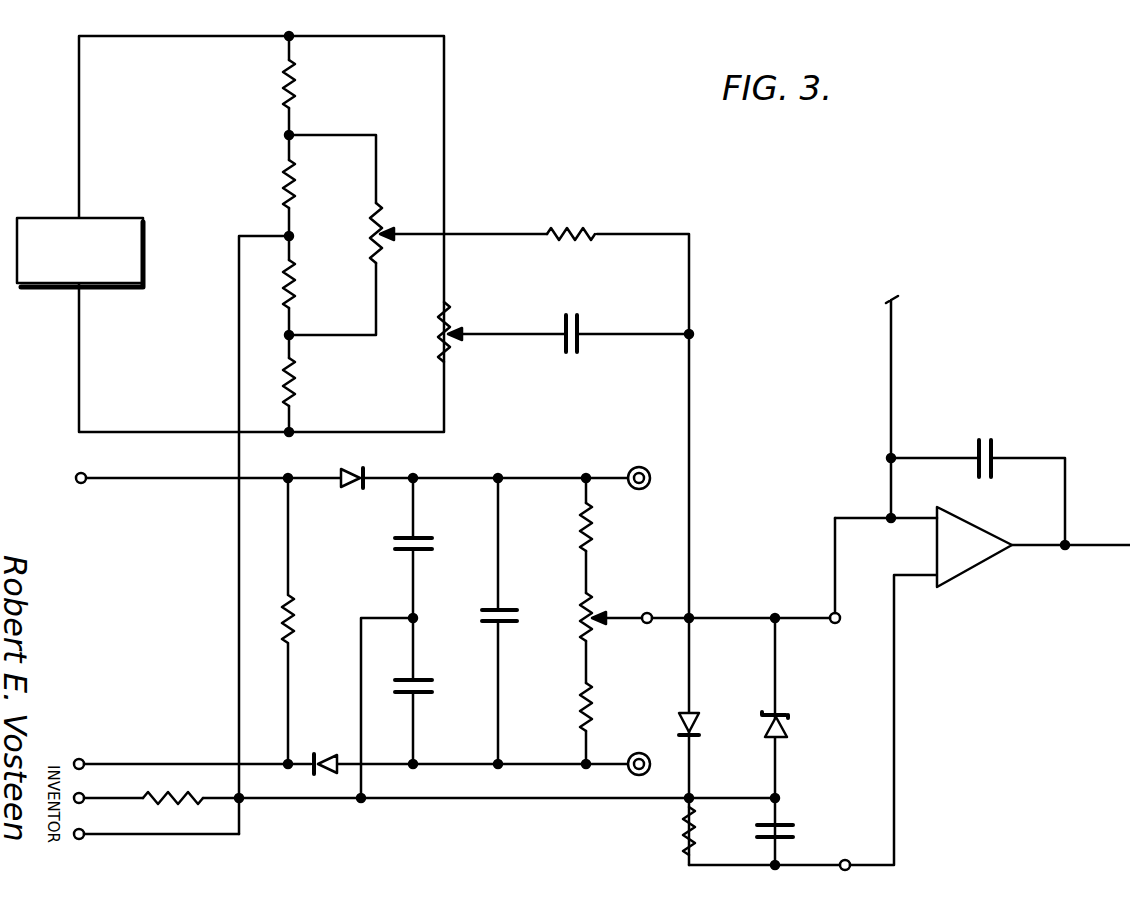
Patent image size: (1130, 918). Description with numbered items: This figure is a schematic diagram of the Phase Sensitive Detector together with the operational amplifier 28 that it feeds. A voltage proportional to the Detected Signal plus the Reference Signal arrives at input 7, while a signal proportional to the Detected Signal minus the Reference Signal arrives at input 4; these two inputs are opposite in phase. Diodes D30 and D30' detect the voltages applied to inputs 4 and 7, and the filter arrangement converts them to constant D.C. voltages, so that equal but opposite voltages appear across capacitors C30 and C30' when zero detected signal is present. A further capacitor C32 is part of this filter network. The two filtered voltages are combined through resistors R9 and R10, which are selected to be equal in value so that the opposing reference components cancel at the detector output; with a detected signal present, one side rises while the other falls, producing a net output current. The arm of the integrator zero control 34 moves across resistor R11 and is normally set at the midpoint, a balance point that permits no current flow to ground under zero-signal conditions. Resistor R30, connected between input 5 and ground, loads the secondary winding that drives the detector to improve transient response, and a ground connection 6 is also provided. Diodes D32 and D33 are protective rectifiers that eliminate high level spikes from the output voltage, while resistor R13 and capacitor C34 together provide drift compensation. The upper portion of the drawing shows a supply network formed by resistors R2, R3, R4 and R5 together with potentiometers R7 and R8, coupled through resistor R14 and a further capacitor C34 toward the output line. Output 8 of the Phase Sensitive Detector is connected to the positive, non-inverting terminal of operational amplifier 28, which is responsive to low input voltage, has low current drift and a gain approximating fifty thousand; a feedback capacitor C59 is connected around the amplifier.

The resistor R2 is at (283, 94).
The resistor R3 is at (283, 187).
The resistor R4 is at (296, 282).
The resistor R5 is at (296, 384).
The potentiometer R7 is at (370, 223).
The potentiometer R8 is at (450, 352).
The resistor R9 is at (592, 526).
The resistor R10 is at (593, 698).
The resistor R11 is at (583, 616).
The resistor R13 is at (684, 832).
The resistor R14 is at (584, 232).
The resistor R30 is at (182, 795).
The capacitor C30 is at (388, 558).
The capacitor C30' is at (432, 703).
The capacitor C32 is at (516, 626).
The capacitor C34 is at (582, 332).
The capacitor C59 is at (993, 439).
The diode D30 is at (345, 504).
The diode D30' is at (331, 799).
The protective rectifier D32 is at (700, 718).
The protective rectifier D33 is at (787, 714).
The input 4 is at (81, 484).
The input 5 is at (88, 797).
The ground terminal 6 is at (84, 840).
The input 7 is at (79, 758).
The output 8 is at (848, 860).
The operational amplifier 28 is at (966, 578).
The integrator zero control 34 is at (626, 614).